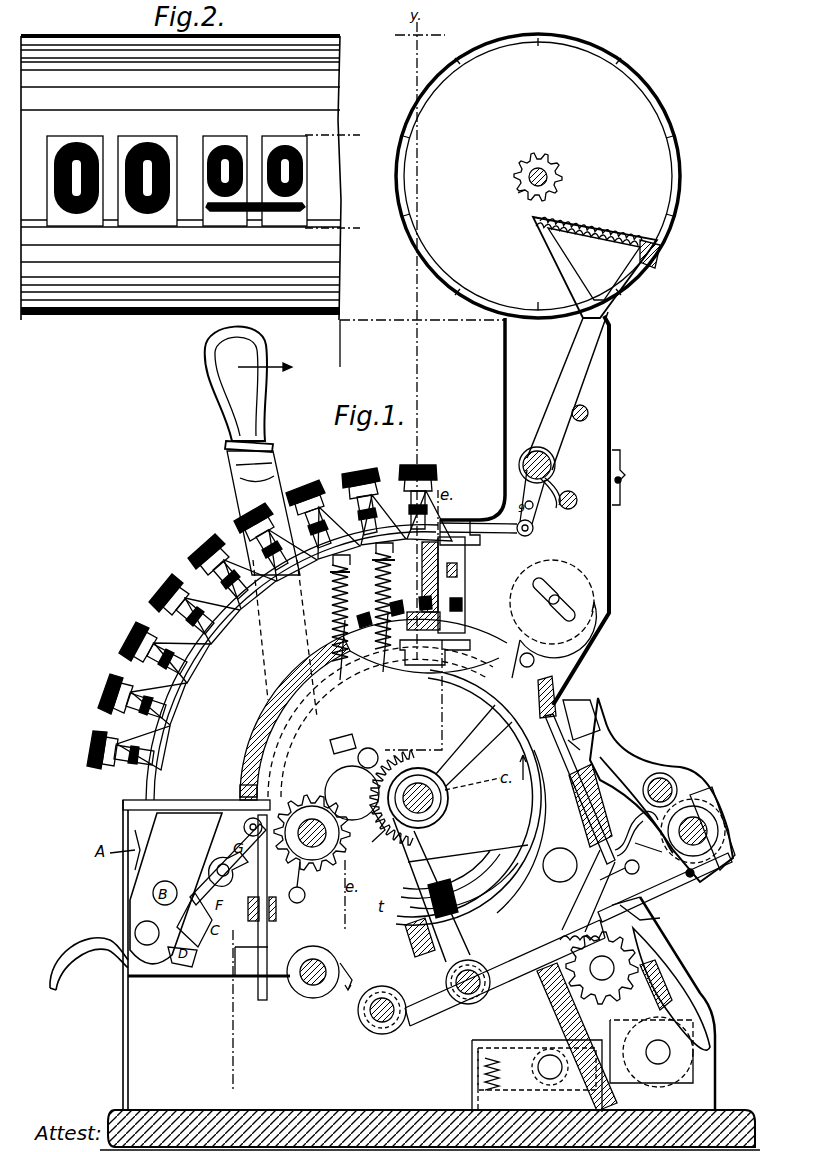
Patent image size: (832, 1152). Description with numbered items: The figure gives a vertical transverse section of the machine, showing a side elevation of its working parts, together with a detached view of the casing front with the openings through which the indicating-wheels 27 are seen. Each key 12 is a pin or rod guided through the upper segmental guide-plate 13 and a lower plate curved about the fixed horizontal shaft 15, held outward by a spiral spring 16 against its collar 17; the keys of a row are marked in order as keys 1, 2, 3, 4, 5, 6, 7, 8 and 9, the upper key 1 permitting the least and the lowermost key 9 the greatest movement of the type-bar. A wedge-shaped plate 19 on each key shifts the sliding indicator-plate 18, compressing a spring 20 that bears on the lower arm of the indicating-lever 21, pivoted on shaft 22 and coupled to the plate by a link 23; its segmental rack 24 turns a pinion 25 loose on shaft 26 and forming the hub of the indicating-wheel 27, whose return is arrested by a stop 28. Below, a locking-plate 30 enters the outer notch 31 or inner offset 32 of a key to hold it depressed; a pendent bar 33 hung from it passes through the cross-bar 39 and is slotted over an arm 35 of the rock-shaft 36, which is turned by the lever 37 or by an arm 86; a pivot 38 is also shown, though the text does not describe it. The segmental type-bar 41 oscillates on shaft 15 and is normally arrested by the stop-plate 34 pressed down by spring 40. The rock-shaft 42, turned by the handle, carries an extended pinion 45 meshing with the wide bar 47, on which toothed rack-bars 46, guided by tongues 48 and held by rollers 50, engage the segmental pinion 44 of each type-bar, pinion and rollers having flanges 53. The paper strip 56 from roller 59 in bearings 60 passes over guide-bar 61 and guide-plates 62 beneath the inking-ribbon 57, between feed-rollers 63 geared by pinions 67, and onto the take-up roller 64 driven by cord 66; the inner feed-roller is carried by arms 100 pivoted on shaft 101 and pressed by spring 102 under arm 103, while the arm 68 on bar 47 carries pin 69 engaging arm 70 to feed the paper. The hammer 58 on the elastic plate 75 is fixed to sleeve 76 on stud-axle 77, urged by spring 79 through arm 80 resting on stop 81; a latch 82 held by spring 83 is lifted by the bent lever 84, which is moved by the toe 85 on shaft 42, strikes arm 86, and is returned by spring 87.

In FIG. 1, the key (figure one) 1 is at (418, 485).
In FIG. 1, the key (figure two) 2 is at (361, 490).
In FIG. 1, the key (figure three) 3 is at (308, 505).
In FIG. 1, the key (figure four) 4 is at (260, 529).
In FIG. 1, the key (figure five) 5 is at (216, 562).
In FIG. 1, the key (figure six) 6 is at (177, 601).
In FIG. 1, the key (figure seven) 7 is at (147, 647).
In FIG. 1, the key (figure eight) 8 is at (124, 696).
In FIG. 1, the key (figure nine) 9 is at (111, 750).
In FIG. 1, the key 12 is at (286, 634).
In FIG. 1, the upper segmental guide-plate 13 is at (252, 451).
In FIG. 1, the fixed horizontal shaft 15 is at (468, 828).
In FIG. 1, the spiral spring 16 is at (392, 585).
In FIG. 1, the collar 17 is at (395, 560).
In FIG. 1, the indicator-plate 18 is at (458, 548).
In FIG. 1, the wedge-shaped plate 19 is at (292, 630).
In FIG. 1, the spring 20 is at (556, 505).
In FIG. 1, the indicating-lever 21 is at (567, 391).
In FIG. 1, the horizontal shaft 22 is at (555, 465).
In FIG. 1, the link 23 is at (520, 536).
In FIG. 1, the segmental rack 24 is at (590, 233).
In FIG. 1, the pinion 25 is at (518, 193).
In FIG. 1, the horizontal shaft 26 is at (548, 177).
In FIG. 2, the indicating drum or wheel 27 is at (80, 222).
In FIG. 1, the indicating drum or wheel 27 is at (538, 176).
In FIG. 1, the stop 28 is at (586, 407).
In FIG. 1, the locking-plate 30 is at (385, 660).
In FIG. 1, the outer notch or offset 31 is at (360, 665).
In FIG. 1, the inner offset 32 is at (373, 691).
In FIG. 1, the pendent bar 33 is at (267, 935).
In FIG. 1, the stop-plate 34 is at (455, 658).
In FIG. 1, the arm 35 is at (251, 961).
In FIG. 1, the horizontal rock-shaft 36 is at (313, 985).
In FIG. 1, the arm or lever 37 is at (100, 943).
In FIG. 1, the pivot 38 is at (244, 831).
In FIG. 1, the horizontal cross-bar 39 is at (252, 895).
In FIG. 1, the spring 40 is at (457, 570).
In FIG. 1, the segmental type-bar 41 is at (480, 680).
In FIG. 1, the rock-shaft 42 is at (318, 850).
In FIG. 1, the segmental pinion 44 is at (418, 785).
In FIG. 1, the extended pinion 45 is at (375, 828).
In FIG. 1, the rack-bar 46 is at (430, 866).
In FIG. 1, the wide rack-bar 47 is at (365, 1003).
In FIG. 1, the tongue 48 is at (366, 748).
In FIG. 1, the rollers 50 is at (382, 1010).
In FIG. 1, the encircling flanges 53 is at (393, 958).
In FIG. 1, the strip of paper 56 is at (520, 618).
In FIG. 1, the inking-ribbon 57 is at (600, 770).
In FIG. 1, the hammer 58 is at (581, 720).
In FIG. 1, the detachable roller 59 is at (553, 609).
In FIG. 1, the bearings 60 is at (553, 640).
In FIG. 1, the transverse guide-bar 61 is at (534, 660).
In FIG. 1, the guide-plates 62 is at (552, 685).
In FIG. 1, the feed-rollers 63 is at (590, 955).
In FIG. 1, the take-up roller 64 is at (651, 1052).
In FIG. 1, the cord 66 is at (584, 750).
In FIG. 1, the pinions 67 is at (607, 985).
In FIG. 1, the arm 68 is at (464, 881).
In FIG. 1, the lateral pin 69 is at (553, 878).
In FIG. 1, the pawl-arm 70 is at (588, 891).
In FIG. 1, the elastic plate 75 is at (660, 760).
In FIG. 1, the sleeve 76 is at (718, 826).
In FIG. 1, the stud-axle 77 is at (725, 865).
In FIG. 1, the spring 79 is at (631, 833).
In FIG. 1, the arm 80 is at (649, 840).
In FIG. 1, the stop 81 is at (690, 877).
In FIG. 1, the latch 82 is at (619, 870).
In FIG. 1, the spring 83 is at (647, 909).
In FIG. 1, the bent lever 84 is at (505, 973).
In FIG. 1, the toe 85 is at (352, 793).
In FIG. 1, the arm 86 is at (352, 969).
In FIG. 1, the spring 87 is at (580, 1010).
In FIG. 1, the oscillating arms 100 is at (537, 1067).
In FIG. 1, the fixed shaft 101 is at (550, 1067).
In FIG. 1, the spring 102 is at (480, 1080).
In FIG. 1, the arm 103 is at (478, 1048).